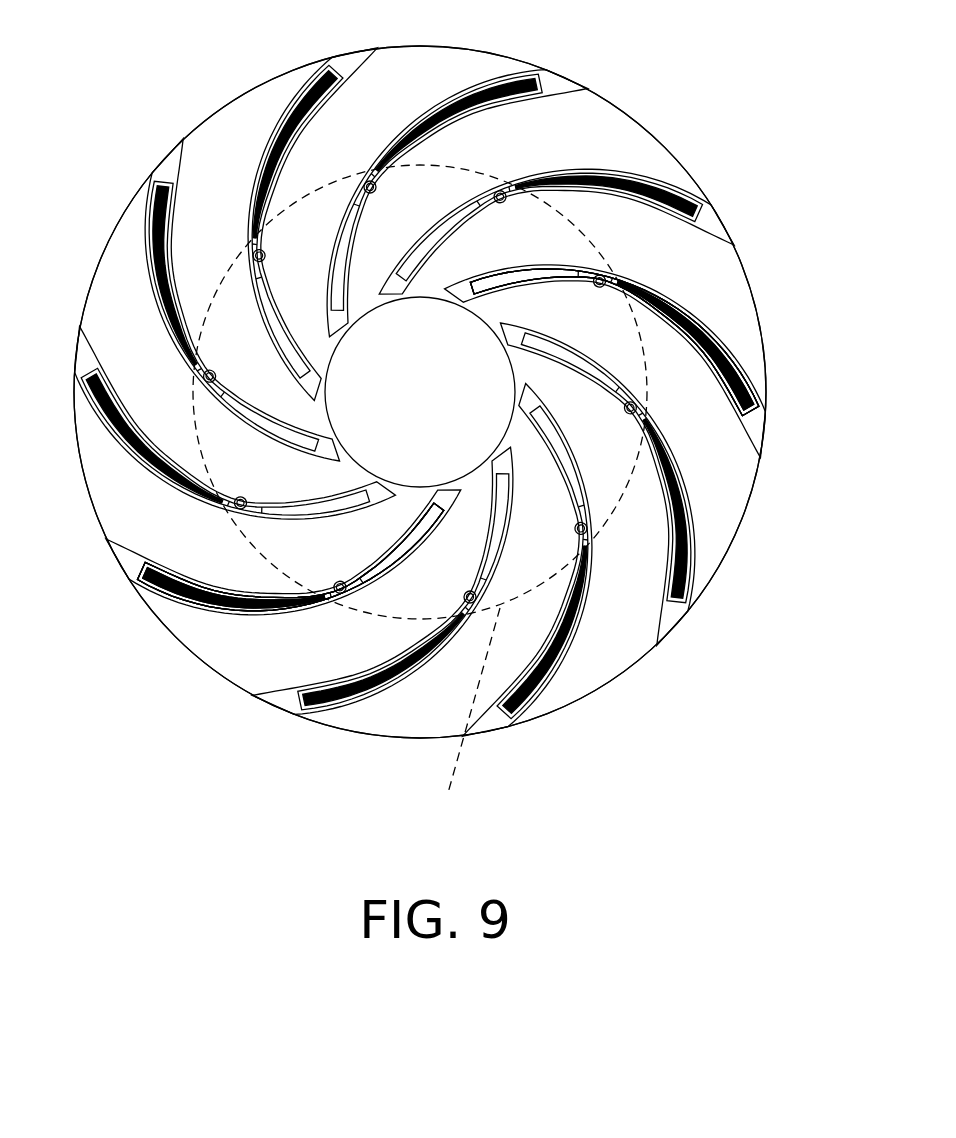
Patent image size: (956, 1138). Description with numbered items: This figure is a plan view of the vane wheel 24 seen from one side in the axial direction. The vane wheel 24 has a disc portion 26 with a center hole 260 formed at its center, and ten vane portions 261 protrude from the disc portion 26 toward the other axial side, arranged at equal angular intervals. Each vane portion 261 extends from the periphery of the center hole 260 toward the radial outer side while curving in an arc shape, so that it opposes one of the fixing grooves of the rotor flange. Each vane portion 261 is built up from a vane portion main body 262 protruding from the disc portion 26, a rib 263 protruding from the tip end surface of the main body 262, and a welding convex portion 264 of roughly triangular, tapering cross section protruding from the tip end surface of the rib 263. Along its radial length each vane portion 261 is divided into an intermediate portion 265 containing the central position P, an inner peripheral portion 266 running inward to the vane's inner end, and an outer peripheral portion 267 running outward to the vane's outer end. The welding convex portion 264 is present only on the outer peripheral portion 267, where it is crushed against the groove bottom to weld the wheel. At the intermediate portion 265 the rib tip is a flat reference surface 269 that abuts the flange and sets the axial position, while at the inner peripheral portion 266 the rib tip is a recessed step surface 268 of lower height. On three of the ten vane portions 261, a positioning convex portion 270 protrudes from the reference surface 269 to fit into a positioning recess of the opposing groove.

The vane wheel 24 is at (170, 110).
The disc portion 26 is at (600, 113).
The center hole 260 is at (338, 358).
The vane portion 261 is at (280, 96).
The vane portion main body 262 is at (327, 707).
The rib 263 is at (652, 187).
The welding convex portion 264 is at (672, 207).
The intermediate portion 265 is at (670, 284).
The inner peripheral portion 266 is at (576, 272).
The outer peripheral portion 267 is at (646, 302).
The step surface 268 is at (548, 352).
The reference surface 269 is at (606, 342).
The positioning convex portion 270 is at (378, 189).
The central position P is at (420, 495).